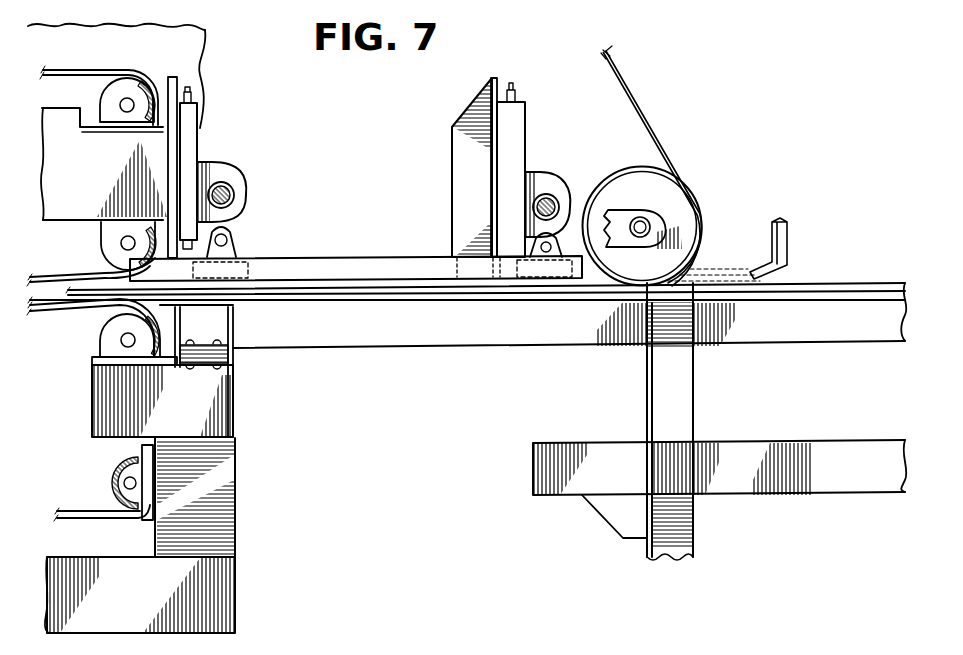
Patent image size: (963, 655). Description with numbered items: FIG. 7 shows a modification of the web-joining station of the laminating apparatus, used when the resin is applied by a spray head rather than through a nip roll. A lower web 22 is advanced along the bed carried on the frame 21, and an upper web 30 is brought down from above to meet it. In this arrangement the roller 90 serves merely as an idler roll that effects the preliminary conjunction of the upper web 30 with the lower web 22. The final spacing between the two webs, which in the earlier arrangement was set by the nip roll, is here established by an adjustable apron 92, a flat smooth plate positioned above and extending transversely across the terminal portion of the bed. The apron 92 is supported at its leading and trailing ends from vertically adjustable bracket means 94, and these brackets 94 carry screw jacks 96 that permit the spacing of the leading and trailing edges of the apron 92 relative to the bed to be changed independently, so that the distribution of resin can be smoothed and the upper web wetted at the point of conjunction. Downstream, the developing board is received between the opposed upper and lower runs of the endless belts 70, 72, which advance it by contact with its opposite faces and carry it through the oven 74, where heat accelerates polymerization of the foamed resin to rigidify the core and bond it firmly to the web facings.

The frame 21 is at (220, 402).
The lower web 22 is at (817, 280).
The upper web 30 is at (623, 98).
The endless belt 70 is at (67, 70).
The endless belt 72 is at (72, 313).
The oven 74 is at (225, 52).
The roller 90 is at (641, 190).
The adjustable apron 92 is at (308, 268).
The bracket means 94 is at (240, 183).
The screw jack 96 is at (190, 128).